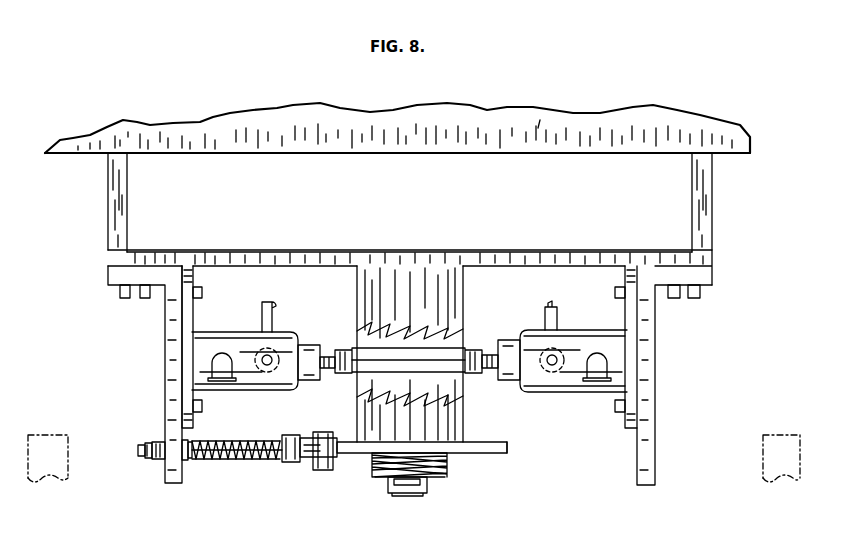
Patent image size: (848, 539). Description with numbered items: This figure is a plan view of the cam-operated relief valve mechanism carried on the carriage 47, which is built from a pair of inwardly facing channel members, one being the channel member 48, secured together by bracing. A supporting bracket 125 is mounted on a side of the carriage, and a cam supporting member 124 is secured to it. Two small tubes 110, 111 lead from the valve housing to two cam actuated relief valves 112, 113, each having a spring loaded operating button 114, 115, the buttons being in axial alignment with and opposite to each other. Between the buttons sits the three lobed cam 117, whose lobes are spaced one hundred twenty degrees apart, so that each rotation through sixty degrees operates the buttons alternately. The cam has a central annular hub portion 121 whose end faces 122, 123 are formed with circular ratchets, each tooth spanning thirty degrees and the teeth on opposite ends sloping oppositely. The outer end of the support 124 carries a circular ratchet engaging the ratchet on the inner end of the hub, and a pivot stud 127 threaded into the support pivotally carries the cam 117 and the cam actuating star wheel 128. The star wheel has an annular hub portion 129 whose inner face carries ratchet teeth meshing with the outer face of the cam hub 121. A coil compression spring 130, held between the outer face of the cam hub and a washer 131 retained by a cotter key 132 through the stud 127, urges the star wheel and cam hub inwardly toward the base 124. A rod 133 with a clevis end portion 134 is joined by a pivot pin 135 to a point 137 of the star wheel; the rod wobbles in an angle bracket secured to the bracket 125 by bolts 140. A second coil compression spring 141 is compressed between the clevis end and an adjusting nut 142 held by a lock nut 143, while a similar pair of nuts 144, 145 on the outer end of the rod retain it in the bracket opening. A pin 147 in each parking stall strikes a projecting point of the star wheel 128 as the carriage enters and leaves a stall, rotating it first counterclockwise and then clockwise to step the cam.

The carriage 47 is at (645, 122).
The channel member 48 is at (540, 120).
The supporting bracket 125 is at (700, 222).
The bolts 140 is at (135, 292).
The cam supporting member 124 is at (425, 290).
The end face of cam hub 123 is at (372, 326).
The end face of cam hub 122 is at (450, 396).
The central annular hub portion 121 is at (470, 350).
The cam 117 is at (398, 356).
The operating button 114 is at (327, 370).
The operating button 115 is at (490, 360).
The cam actuated relief valve 112 is at (284, 372).
The small tube 110 is at (262, 306).
The cam actuated relief valve 113 is at (570, 372).
The small tube 111 is at (557, 312).
The rod 133 is at (144, 446).
The nut 145 is at (150, 458).
The nut 144 is at (158, 462).
The adjusting nut 142 is at (190, 442).
The lock nut 143 is at (190, 462).
The second coil compression spring 141 is at (240, 440).
The clevis end portion 134 is at (290, 463).
The point of star wheel 137 is at (272, 462).
The pivot pin 135 is at (330, 466).
The annular hub portion of star wheel 129 is at (458, 432).
The cam actuating star wheel 128 is at (508, 452).
The coil compression spring 130 is at (443, 465).
The washer 131 is at (376, 472).
The cotter key 132 is at (408, 485).
The pivot stud 127 is at (427, 487).
The pin 147 is at (40, 440).